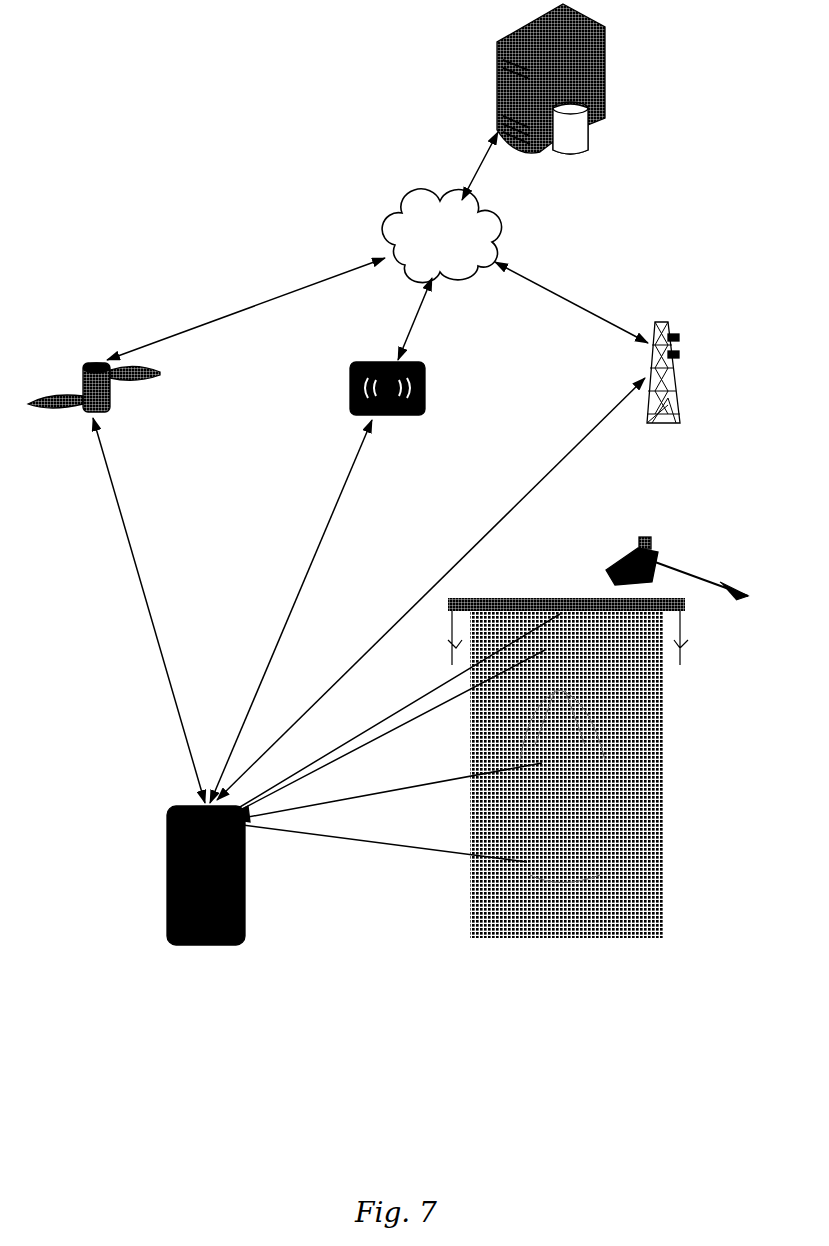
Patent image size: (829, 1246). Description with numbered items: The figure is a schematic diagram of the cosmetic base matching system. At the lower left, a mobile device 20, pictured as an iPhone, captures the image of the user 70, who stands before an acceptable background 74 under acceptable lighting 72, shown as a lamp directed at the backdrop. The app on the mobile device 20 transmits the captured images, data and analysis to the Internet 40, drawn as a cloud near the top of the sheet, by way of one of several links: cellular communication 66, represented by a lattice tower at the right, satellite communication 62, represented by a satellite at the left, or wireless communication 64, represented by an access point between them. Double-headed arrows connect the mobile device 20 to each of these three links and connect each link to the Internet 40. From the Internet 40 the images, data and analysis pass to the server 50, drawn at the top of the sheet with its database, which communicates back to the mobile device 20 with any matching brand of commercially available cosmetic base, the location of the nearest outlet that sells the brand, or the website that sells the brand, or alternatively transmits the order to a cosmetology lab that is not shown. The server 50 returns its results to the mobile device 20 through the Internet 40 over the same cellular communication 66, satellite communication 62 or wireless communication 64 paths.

The mobile device 20 is at (177, 877).
The Internet 40 is at (492, 238).
The server 50 is at (605, 73).
The satellite communication 62 is at (83, 380).
The wireless communication 64 is at (425, 388).
The cellular communication 66 is at (678, 345).
The user 70 is at (570, 692).
The acceptable lighting 72 is at (660, 560).
The acceptable background 74 is at (642, 845).